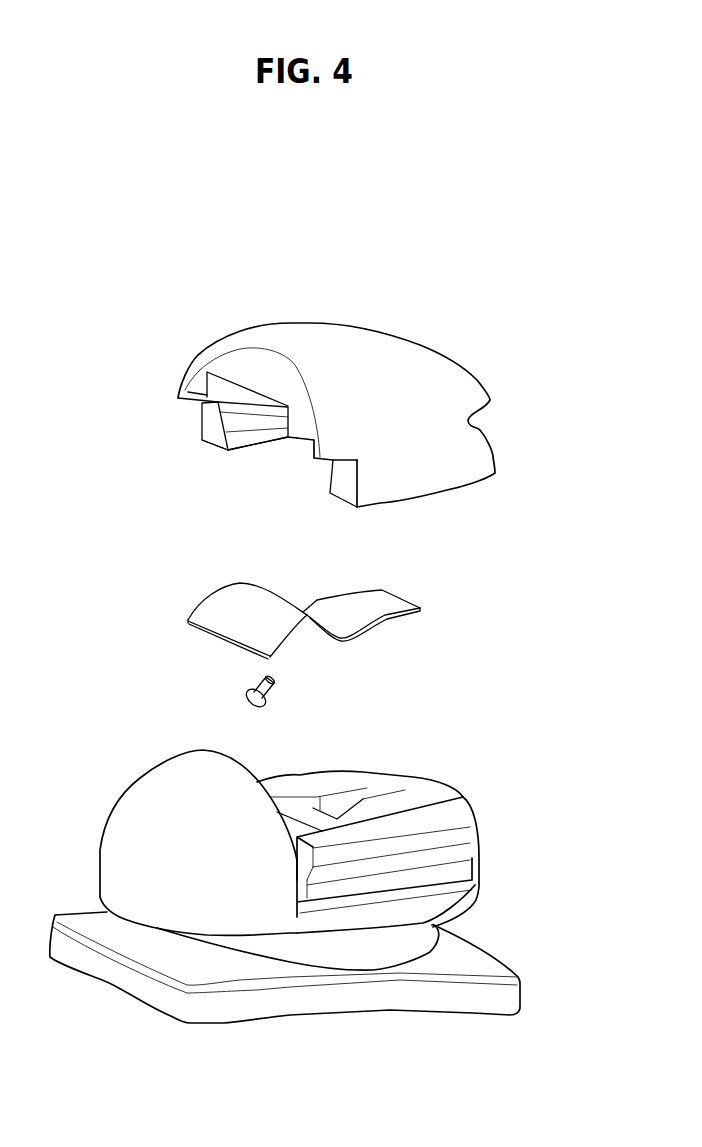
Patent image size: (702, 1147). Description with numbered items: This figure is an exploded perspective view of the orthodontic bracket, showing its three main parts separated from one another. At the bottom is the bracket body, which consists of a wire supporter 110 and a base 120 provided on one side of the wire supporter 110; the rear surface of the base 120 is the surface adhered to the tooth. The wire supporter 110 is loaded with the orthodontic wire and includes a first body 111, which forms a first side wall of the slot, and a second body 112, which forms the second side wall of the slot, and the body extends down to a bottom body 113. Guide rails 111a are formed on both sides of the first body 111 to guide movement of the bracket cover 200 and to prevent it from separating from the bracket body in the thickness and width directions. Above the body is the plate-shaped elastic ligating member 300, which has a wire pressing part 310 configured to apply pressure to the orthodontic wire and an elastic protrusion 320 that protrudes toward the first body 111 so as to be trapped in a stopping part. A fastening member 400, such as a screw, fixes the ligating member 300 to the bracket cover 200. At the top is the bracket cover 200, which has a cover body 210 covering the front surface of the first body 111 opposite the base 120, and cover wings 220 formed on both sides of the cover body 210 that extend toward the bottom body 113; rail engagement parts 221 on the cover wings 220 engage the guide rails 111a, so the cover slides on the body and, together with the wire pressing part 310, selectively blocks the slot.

The wire supporter 110 is at (314, 857).
The first body 111 is at (418, 852).
The guide rails 111a is at (473, 867).
The second body 112 is at (145, 797).
The bottom body 113 is at (457, 893).
The base 120 is at (463, 1002).
The bracket cover 200 is at (297, 409).
The cover body 210 is at (388, 332).
The cover wings 220 is at (200, 426).
The rail engagement parts 221 is at (228, 449).
The ligating member 300 is at (304, 636).
The wire pressing part 310 is at (197, 635).
The elastic protrusion 320 is at (346, 646).
The fastening member 400 is at (246, 698).